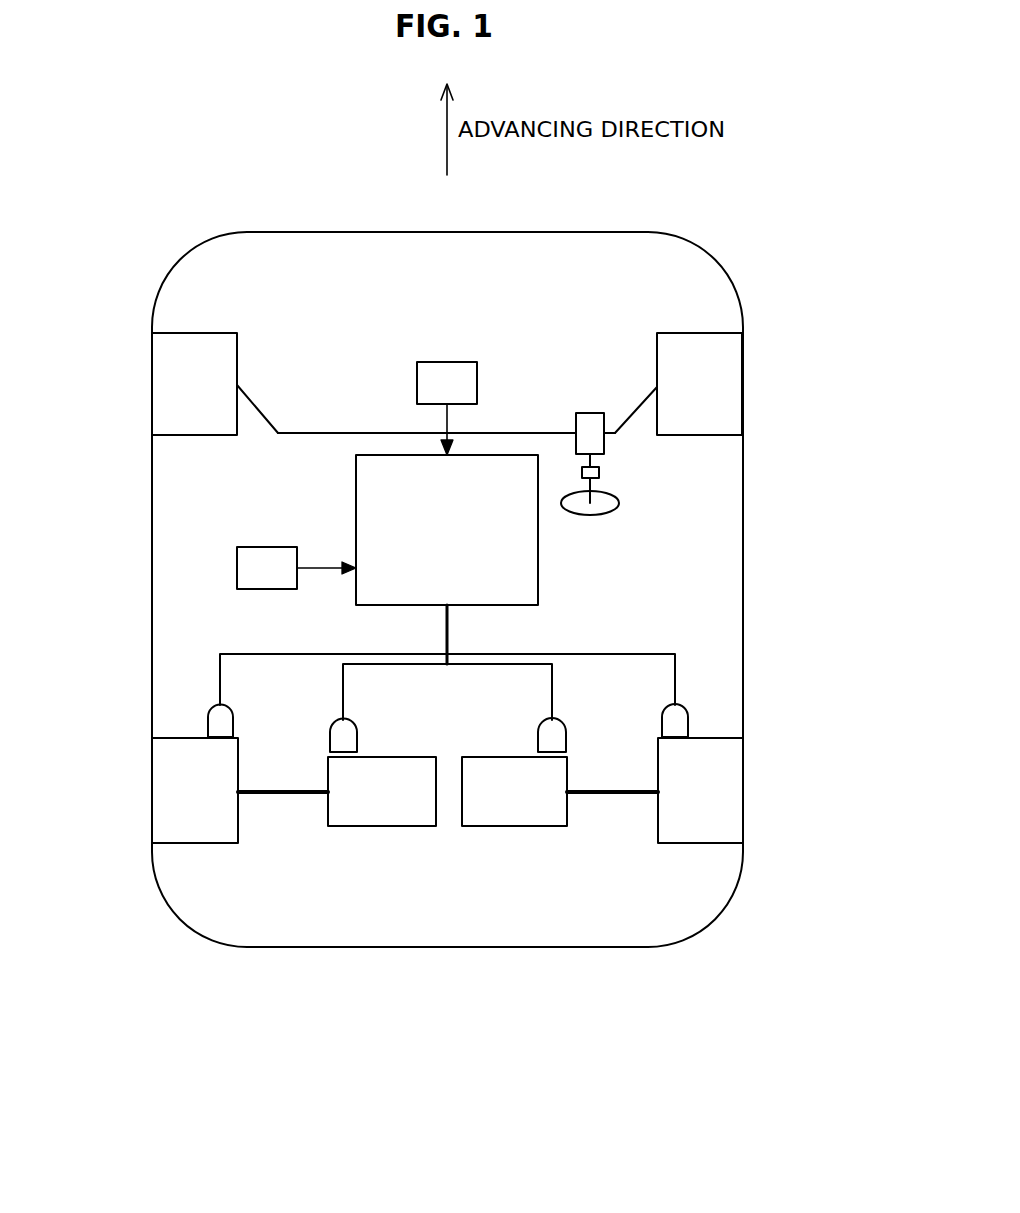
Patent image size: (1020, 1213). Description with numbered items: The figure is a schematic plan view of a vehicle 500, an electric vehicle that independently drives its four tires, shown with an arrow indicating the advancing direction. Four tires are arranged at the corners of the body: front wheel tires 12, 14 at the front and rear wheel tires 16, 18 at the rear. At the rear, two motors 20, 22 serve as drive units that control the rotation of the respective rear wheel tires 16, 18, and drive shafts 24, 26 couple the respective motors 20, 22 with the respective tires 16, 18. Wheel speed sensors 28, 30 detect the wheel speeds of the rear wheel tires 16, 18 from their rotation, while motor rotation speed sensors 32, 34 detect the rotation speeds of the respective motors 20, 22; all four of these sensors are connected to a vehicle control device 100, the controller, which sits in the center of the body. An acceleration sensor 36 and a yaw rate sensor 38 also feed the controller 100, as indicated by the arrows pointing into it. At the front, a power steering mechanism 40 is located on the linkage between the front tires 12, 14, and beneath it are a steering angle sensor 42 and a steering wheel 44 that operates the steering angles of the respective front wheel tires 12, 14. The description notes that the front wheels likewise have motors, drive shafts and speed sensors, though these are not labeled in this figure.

The front tire 12 is at (172, 354).
The front tire 14 is at (725, 356).
The rear tire 16 is at (172, 826).
The rear tire 18 is at (727, 826).
The motor 20 is at (383, 828).
The motor 22 is at (517, 828).
The drive shaft 24 is at (285, 797).
The drive shaft 26 is at (614, 797).
The wheel speed sensor 28 is at (210, 708).
The wheel speed sensor 30 is at (684, 708).
The motor rotation speed sensor 32 is at (333, 724).
The motor rotation speed sensor 34 is at (563, 724).
The acceleration sensor 36 is at (268, 545).
The yaw rate sensor 38 is at (444, 360).
The power steering mechanism 40 is at (589, 411).
The steering angle sensor 42 is at (600, 473).
The steering wheel 44 is at (619, 501).
The vehicle control device 100 is at (540, 572).
The vehicle 500 is at (699, 1042).